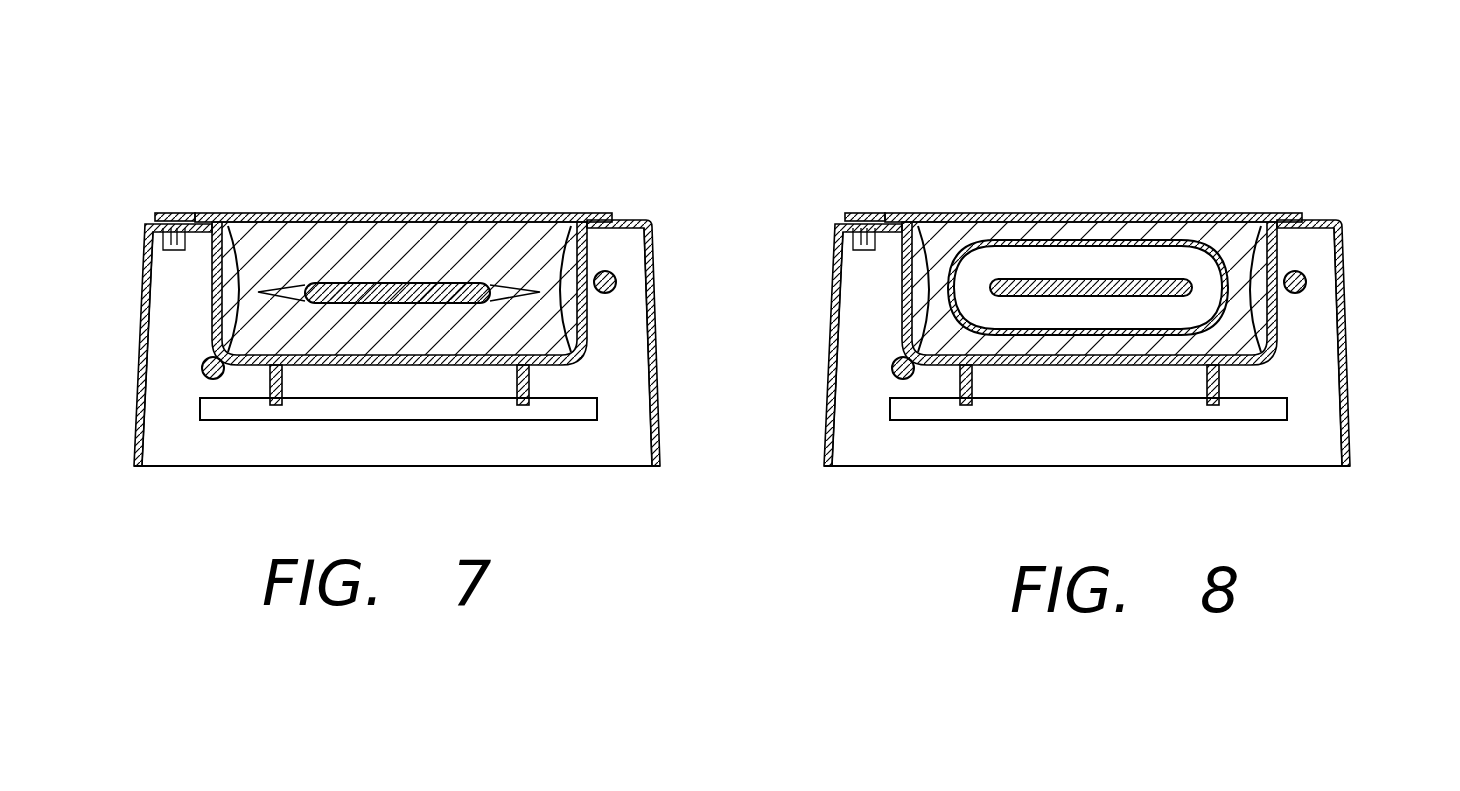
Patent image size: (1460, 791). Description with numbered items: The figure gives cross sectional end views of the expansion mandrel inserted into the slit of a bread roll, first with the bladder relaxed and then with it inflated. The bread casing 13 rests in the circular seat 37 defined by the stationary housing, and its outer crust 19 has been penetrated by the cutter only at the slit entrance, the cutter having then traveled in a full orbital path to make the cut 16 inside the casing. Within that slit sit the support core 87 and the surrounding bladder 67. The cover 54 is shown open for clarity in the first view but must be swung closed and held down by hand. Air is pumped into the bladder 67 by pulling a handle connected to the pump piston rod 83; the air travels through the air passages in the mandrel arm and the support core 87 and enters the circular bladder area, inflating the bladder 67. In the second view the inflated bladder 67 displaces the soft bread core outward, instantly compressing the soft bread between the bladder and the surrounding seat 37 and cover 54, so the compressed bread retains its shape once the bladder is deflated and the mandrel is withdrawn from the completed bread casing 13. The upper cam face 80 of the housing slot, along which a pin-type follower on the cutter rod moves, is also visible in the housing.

In FIG. 7, the bread casing 13 is at (270, 262).
In FIG. 8, the bread casing 13 is at (930, 267).
In FIG. 7, the cut 16 is at (285, 238).
In FIG. 7, the outer crust 19 is at (592, 343).
In FIG. 8, the outer crust 19 is at (1265, 353).
In FIG. 7, the circular seat 37 is at (210, 315).
In FIG. 8, the circular seat 37 is at (903, 290).
In FIG. 7, the cover 54 is at (555, 222).
In FIG. 8, the cover 54 is at (1220, 218).
In FIG. 7, the bladder 67 is at (352, 280).
In FIG. 8, the bladder 67 is at (1013, 242).
In FIG. 7, the upper cam face 80 is at (618, 282).
In FIG. 7, the pump piston rod 83 is at (205, 370).
In FIG. 7, the support core 87 is at (432, 283).
In FIG. 8, the support core 87 is at (1127, 280).